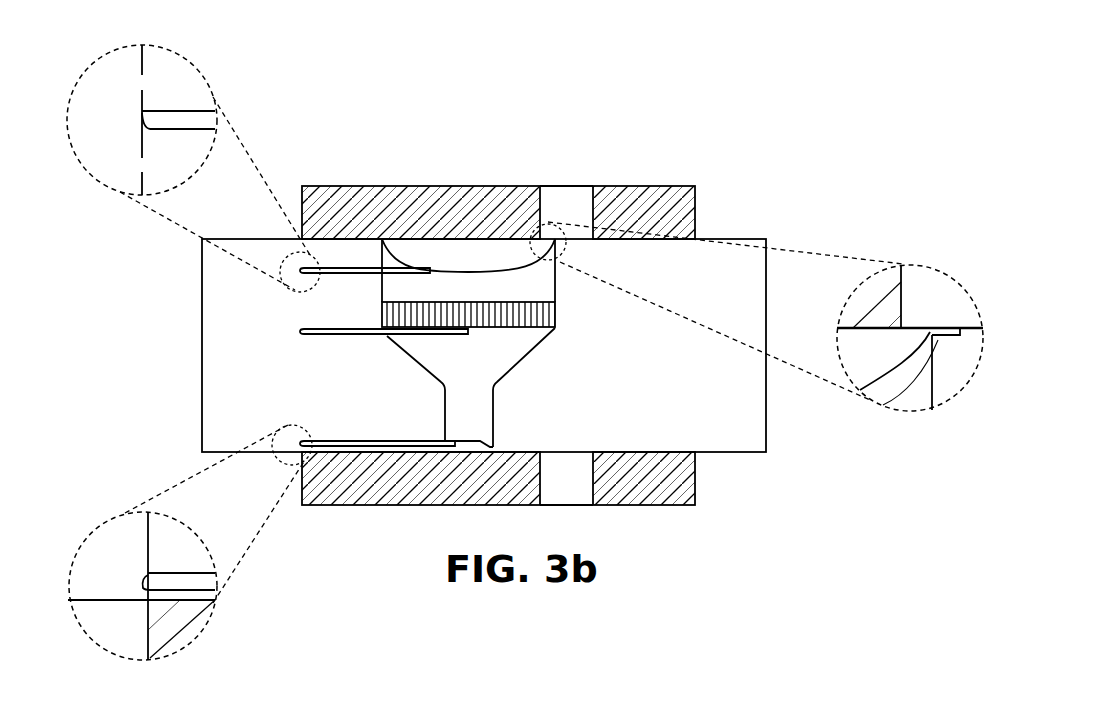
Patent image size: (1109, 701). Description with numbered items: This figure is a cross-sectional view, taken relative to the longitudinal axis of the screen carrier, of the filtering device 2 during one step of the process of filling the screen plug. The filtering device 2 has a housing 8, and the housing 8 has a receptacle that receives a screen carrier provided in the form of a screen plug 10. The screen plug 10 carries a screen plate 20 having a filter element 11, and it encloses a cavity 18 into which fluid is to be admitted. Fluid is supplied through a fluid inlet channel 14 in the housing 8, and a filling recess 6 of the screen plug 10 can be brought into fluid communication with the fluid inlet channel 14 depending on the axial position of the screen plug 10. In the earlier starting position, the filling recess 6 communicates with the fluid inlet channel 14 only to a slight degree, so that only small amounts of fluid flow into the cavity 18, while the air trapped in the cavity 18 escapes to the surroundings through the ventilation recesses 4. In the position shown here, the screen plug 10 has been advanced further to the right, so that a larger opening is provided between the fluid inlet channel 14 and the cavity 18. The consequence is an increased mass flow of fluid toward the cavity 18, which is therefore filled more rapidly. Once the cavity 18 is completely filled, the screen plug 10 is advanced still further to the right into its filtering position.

The filtering device 2 is at (879, 189).
The ventilation recesses 4 is at (300, 270).
The filling recess 6 is at (886, 400).
The housing 8 is at (648, 198).
The screen plug 10 is at (732, 433).
The filter element 11 is at (527, 343).
The screen plate 20 is at (556, 318).
The fluid inlet channel 14 is at (568, 198).
The cavity 18 is at (468, 365).